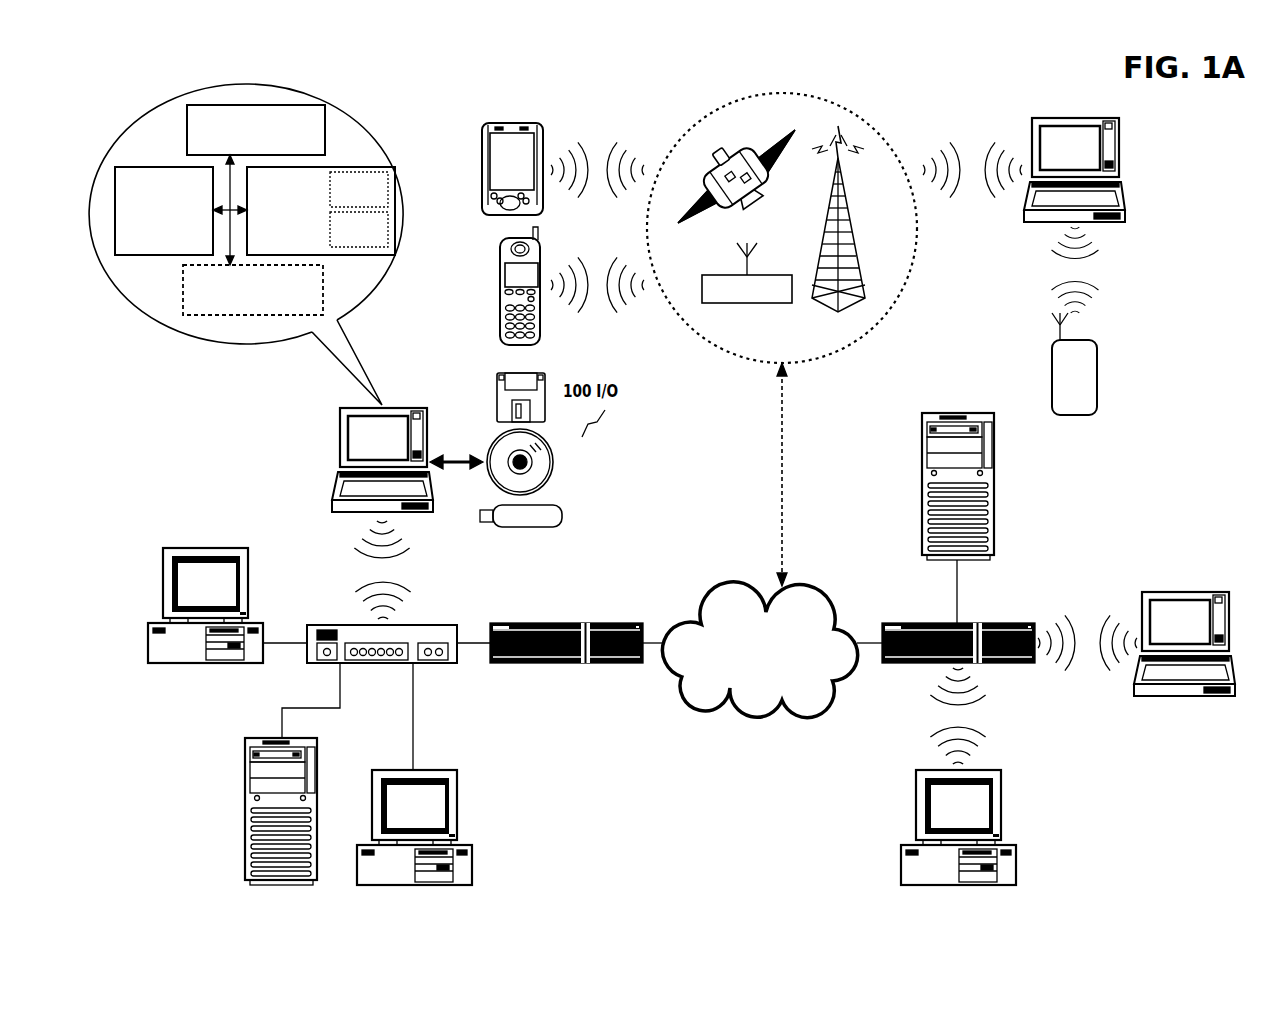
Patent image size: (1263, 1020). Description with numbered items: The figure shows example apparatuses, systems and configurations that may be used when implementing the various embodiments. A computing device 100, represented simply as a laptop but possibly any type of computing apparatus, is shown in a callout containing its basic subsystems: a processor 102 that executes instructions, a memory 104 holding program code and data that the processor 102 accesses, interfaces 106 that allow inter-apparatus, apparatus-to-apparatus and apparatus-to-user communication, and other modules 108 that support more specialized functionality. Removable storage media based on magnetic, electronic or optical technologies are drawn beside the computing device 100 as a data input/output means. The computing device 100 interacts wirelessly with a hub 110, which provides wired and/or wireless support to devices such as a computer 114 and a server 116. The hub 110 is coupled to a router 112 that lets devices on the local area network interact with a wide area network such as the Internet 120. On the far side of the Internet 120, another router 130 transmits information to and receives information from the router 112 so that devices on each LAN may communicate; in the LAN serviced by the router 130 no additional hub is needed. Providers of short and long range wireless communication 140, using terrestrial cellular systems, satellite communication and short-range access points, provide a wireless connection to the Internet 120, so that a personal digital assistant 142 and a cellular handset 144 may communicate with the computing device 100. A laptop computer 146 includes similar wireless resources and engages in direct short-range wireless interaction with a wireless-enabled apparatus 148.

The computing device 100 is at (363, 446).
The processor 102 is at (164, 211).
The memory 104 is at (321, 211).
The interfaces 106 is at (256, 130).
The other modules 108 is at (253, 290).
The hub 110 is at (387, 615).
The router 112 is at (573, 615).
The computer 114 is at (187, 605).
The server 116 is at (258, 811).
The Internet 120 is at (754, 670).
The router 130 is at (959, 614).
The provider of short and long range wireless communication 140 is at (792, 226).
The personal digital assistant 142 is at (490, 163).
The cellular handset 144 is at (497, 286).
The laptop computer 146 is at (1093, 167).
The wireless-enabled apparatus 148 is at (1097, 364).